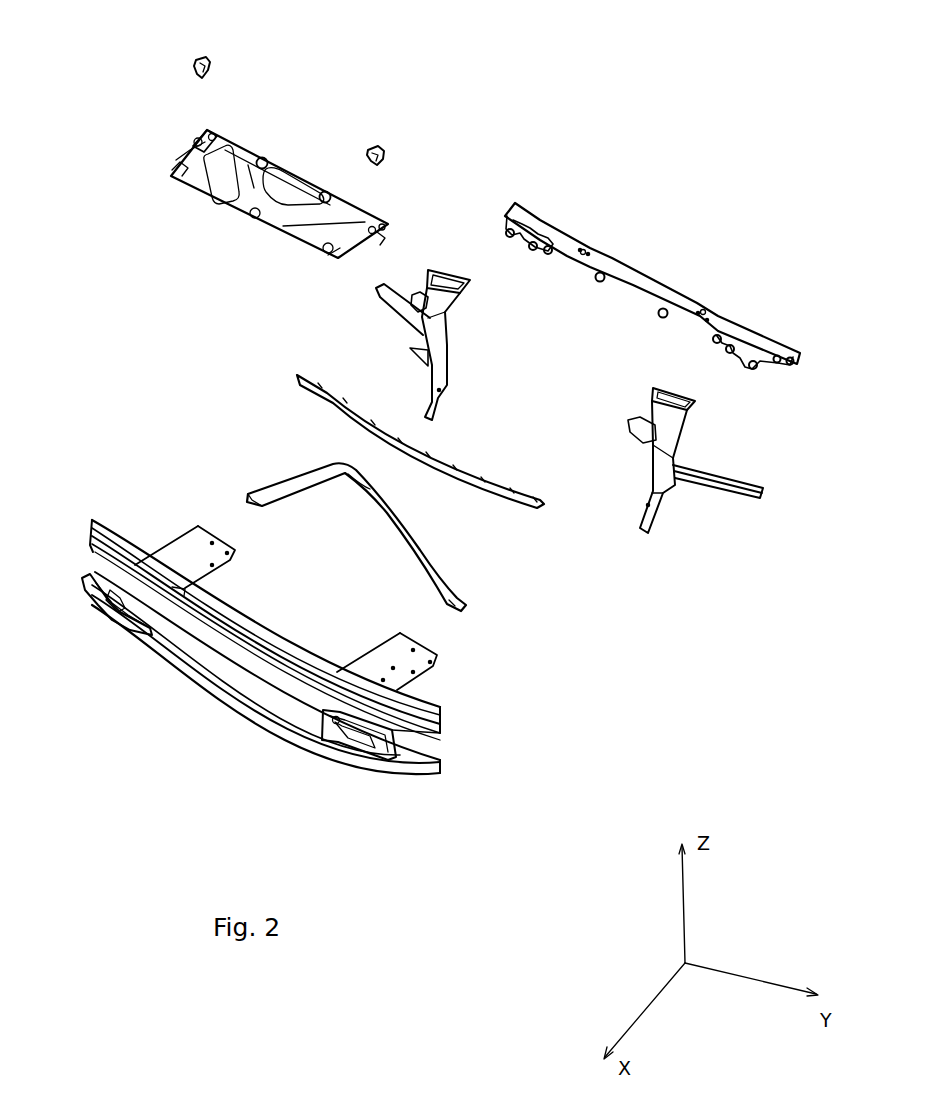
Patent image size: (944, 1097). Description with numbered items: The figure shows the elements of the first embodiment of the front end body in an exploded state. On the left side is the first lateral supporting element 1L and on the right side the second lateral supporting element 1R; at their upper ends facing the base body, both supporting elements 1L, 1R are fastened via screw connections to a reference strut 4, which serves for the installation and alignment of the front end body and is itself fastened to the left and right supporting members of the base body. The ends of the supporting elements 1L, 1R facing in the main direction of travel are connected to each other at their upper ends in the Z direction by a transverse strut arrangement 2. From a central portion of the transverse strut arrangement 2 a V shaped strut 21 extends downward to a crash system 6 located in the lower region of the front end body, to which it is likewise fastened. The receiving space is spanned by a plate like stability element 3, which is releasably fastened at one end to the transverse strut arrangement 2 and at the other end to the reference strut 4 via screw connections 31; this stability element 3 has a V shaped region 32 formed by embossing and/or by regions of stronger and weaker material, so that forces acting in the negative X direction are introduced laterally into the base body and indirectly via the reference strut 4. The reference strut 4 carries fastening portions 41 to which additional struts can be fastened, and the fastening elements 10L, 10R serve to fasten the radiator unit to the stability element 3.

The second lateral supporting element 1R is at (440, 345).
The first lateral supporting element 1L is at (680, 453).
The transverse strut arrangement 2 is at (437, 457).
The V shaped strut 21 is at (412, 528).
The plate like stability element 3 is at (200, 207).
The screw connections 31 is at (325, 195).
The V shaped region 32 is at (197, 148).
The reference strut 4 is at (650, 285).
The fastening portions 41 is at (583, 250).
The crash system 6 is at (423, 723).
The fastening element 10R is at (208, 64).
The fastening element 10L is at (370, 147).